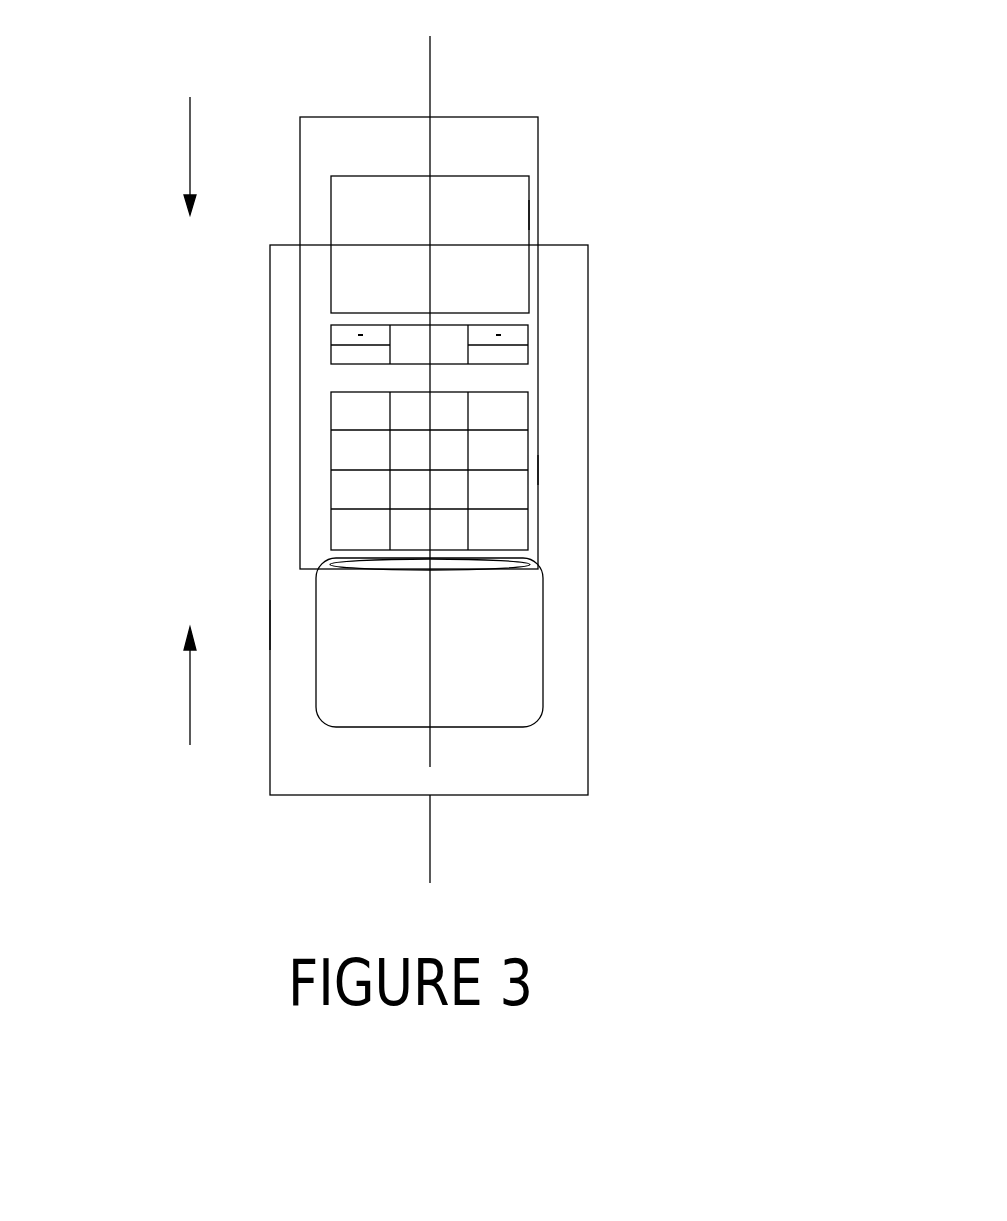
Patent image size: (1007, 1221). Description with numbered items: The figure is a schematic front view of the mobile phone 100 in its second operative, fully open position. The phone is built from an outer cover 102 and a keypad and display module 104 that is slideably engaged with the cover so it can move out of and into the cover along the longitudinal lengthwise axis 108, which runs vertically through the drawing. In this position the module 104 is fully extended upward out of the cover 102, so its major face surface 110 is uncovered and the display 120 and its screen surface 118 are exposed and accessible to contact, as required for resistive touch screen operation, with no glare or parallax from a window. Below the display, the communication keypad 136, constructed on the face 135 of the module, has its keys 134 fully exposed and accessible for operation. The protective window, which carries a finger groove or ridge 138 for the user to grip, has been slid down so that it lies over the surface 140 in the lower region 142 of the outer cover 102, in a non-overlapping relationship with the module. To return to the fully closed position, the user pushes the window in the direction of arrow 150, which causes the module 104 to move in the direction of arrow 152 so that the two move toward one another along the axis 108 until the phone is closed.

The mobile phone 100 is at (646, 193).
The outer cover 102 is at (607, 588).
The keypad and display module 104 is at (503, 109).
The longitudinal lengthwise axis 108 is at (431, 847).
The major face surface 110 is at (410, 146).
The screen surface 118 is at (410, 265).
The display 120 is at (529, 214).
The keys 134 is at (350, 480).
The face 135 is at (429, 359).
The communication keypad 136 is at (548, 470).
The finger groove or ridge 138 is at (520, 568).
The surface 140 is at (547, 761).
The lower region 142 is at (255, 625).
The direction arrow 150 is at (190, 707).
The direction arrow 152 is at (190, 157).